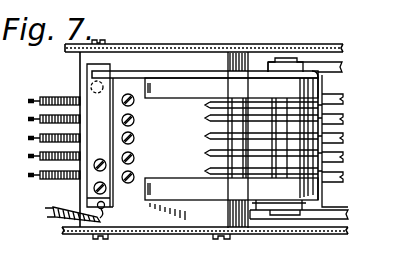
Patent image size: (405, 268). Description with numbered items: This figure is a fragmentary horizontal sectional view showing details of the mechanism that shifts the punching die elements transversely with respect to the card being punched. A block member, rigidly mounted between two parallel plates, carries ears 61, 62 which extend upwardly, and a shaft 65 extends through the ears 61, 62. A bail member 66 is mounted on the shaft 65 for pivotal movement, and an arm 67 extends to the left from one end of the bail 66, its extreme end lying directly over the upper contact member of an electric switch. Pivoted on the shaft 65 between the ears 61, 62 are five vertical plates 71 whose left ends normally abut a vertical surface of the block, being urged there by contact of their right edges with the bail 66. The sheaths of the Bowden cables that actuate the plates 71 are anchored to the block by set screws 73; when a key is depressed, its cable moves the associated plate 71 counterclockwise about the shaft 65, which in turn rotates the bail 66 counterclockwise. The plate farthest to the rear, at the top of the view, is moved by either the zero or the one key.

The ear 61 is at (233, 178).
The ear 62 is at (231, 87).
The shaft 65 is at (293, 60).
The bail member 66 is at (325, 85).
The arm 67 is at (131, 72).
The vertical plates 71 is at (207, 118).
The set screws 73 is at (344, 178).